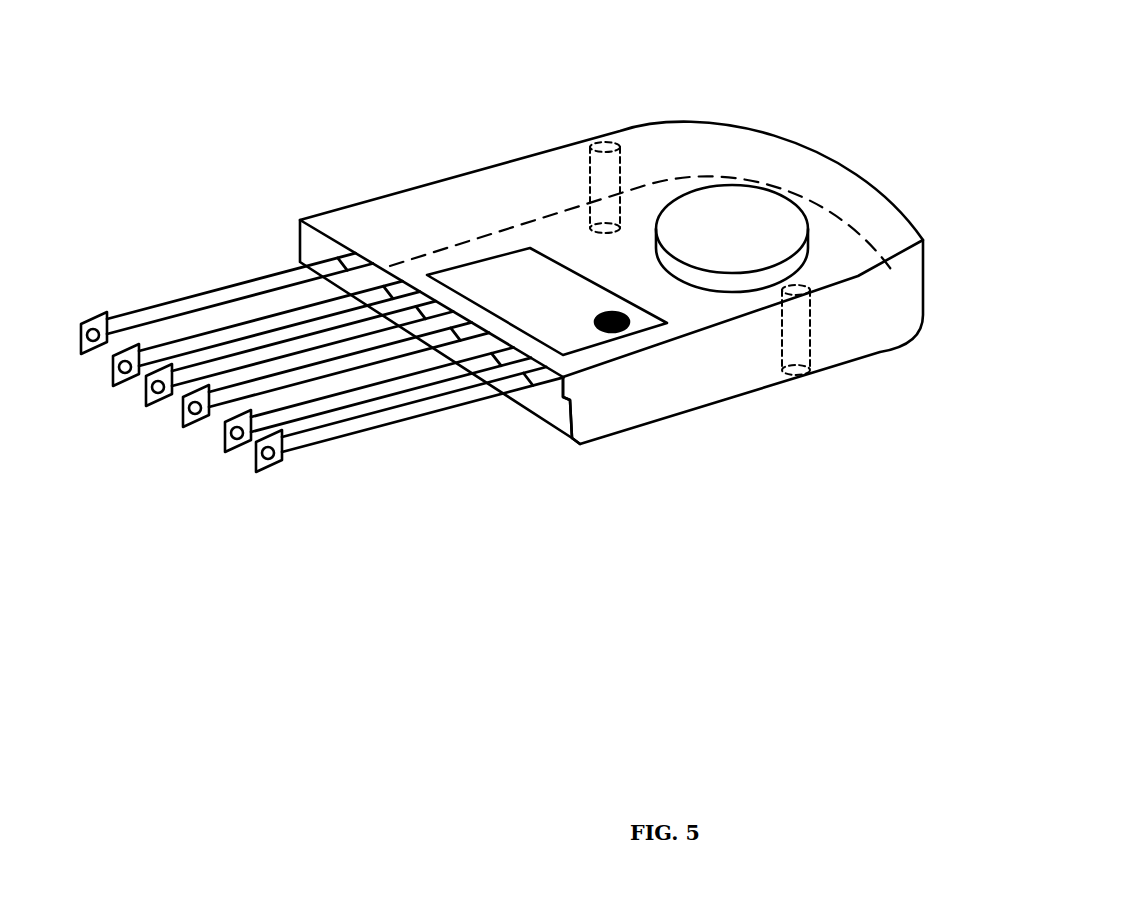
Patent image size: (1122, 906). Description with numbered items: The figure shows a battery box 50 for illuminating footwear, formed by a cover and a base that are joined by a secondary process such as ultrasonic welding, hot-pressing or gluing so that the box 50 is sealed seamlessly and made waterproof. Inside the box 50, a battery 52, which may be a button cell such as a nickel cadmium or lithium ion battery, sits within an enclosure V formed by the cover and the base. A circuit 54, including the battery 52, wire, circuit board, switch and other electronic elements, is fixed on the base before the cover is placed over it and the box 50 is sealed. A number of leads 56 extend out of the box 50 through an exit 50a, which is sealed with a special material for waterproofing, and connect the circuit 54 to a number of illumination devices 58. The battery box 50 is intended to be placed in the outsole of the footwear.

The battery box 50 is at (880, 310).
The exit 50a is at (540, 403).
The battery 52 is at (765, 217).
The circuit 54 is at (520, 276).
The leads 56 is at (390, 423).
The illumination devices 58 is at (256, 470).
The enclosure V is at (653, 197).